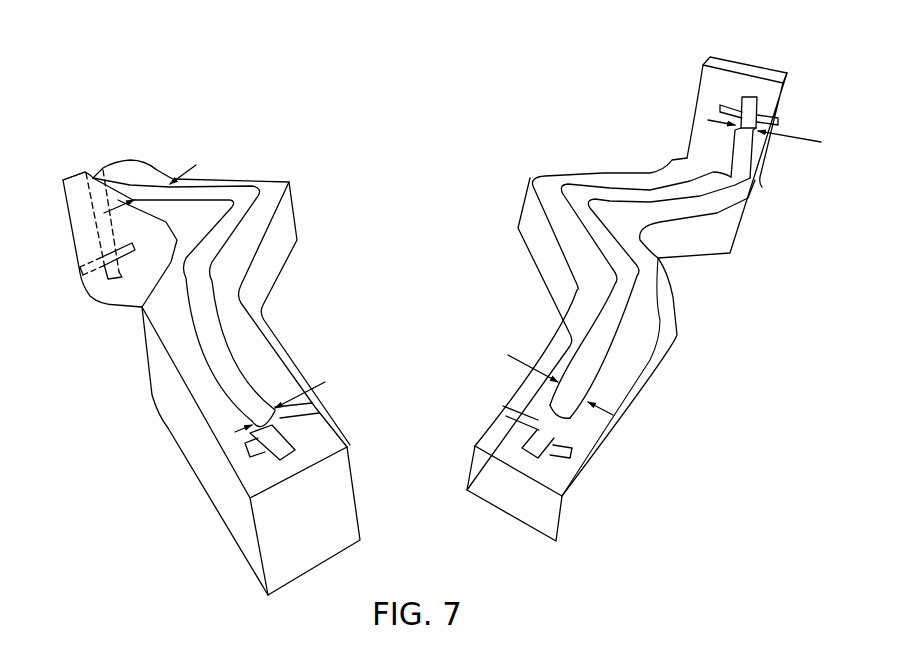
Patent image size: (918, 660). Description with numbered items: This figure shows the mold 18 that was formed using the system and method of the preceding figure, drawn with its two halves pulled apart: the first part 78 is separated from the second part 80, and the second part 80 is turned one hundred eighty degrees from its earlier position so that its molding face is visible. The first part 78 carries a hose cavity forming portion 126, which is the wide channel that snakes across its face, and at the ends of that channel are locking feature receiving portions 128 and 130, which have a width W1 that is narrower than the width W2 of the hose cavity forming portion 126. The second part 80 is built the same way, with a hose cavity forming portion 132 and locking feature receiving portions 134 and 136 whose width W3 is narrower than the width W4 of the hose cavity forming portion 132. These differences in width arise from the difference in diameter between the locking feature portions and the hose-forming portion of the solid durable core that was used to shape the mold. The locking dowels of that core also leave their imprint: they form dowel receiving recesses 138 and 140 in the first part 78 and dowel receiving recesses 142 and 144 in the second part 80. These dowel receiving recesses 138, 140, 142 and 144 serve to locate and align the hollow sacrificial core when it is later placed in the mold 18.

The mold 18 is at (325, 82).
The first part 78 is at (669, 355).
The second part 80 is at (285, 253).
The hose cavity forming portion 126 is at (609, 185).
The locking feature receiving portion 128 is at (520, 435).
The locking feature receiving portion 130 is at (748, 94).
The hose cavity forming portion 132 is at (247, 190).
The locking feature receiving portion 134 is at (288, 460).
The locking feature receiving portion 136 is at (92, 285).
The dowel receiving recess 138 is at (512, 405).
The dowel receiving recess 140 is at (763, 113).
The dowel receiving recess 142 is at (318, 414).
The dowel receiving recess 144 is at (78, 261).
The width W1 is at (805, 140).
The width W2 is at (508, 355).
The width W3 is at (325, 382).
The width W4 is at (196, 165).